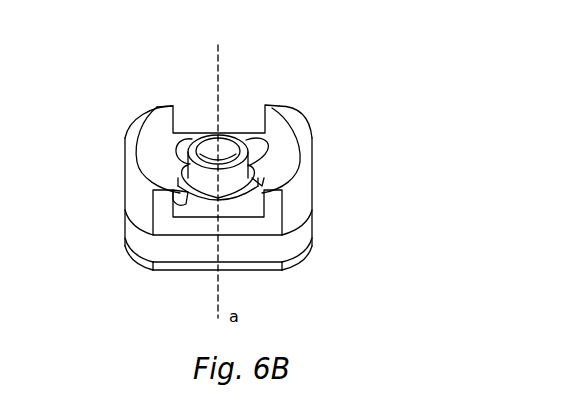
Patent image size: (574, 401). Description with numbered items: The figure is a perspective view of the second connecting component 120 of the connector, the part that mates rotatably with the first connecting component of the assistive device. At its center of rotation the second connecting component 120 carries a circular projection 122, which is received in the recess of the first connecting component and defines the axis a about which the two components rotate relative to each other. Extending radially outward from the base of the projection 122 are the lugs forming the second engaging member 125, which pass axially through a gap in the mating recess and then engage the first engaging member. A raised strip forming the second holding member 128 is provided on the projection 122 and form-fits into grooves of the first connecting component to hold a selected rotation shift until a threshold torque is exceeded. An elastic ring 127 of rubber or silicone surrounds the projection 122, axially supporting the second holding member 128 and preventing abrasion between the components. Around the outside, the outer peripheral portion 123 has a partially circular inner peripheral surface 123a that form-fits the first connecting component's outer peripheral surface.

The second connecting component 120 is at (343, 159).
The projection 122 is at (233, 128).
The outer peripheral portion 123 is at (131, 130).
The inner peripheral surface 123a is at (164, 118).
The second engaging member 125 is at (276, 131).
The elastic ring 127 is at (260, 184).
The second holding member 128 is at (262, 183).